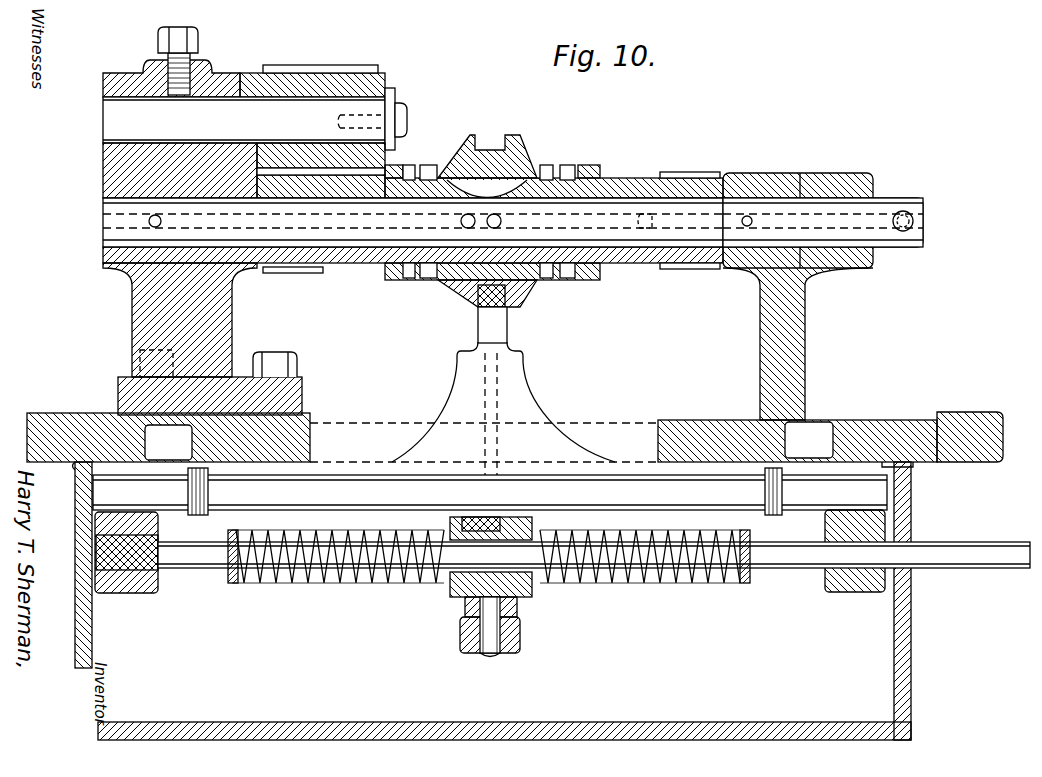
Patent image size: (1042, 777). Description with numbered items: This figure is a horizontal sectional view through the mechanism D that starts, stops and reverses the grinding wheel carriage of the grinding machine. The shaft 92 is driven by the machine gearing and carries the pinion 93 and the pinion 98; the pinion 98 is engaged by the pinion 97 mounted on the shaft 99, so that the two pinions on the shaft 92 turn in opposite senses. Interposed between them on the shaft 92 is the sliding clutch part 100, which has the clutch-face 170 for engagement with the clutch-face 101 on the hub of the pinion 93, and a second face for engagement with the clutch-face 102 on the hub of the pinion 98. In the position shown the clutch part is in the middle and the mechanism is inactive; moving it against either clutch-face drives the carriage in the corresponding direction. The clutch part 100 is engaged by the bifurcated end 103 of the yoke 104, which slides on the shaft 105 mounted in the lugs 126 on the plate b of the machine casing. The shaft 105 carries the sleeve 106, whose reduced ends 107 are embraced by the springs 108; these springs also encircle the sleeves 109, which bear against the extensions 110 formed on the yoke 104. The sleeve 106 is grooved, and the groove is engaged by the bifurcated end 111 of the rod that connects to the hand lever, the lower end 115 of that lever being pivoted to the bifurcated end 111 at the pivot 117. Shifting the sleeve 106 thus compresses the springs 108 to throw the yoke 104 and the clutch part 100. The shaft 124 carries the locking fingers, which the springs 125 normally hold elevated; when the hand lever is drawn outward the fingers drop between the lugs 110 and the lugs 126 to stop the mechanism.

The pinion 97 is at (378, 70).
The shaft 99 is at (560, 296).
The clutch-face 102 is at (412, 164).
The sliding clutch part 100 is at (515, 148).
The clutch-face 170 is at (553, 165).
The clutch-face 101 is at (578, 172).
The shaft 92 is at (795, 175).
The pinion 93 is at (694, 273).
The pinion 98 is at (297, 274).
The bifurcated end 111 is at (432, 280).
The bifurcated end 103 is at (507, 318).
The yoke 104 is at (520, 388).
The shaft 124 is at (658, 485).
The reduced ends 107 is at (430, 528).
The springs 108 is at (373, 585).
The sleeves 109 is at (258, 585).
The extensions 110 is at (215, 585).
The shaft 105 is at (800, 586).
The sleeve 106 is at (532, 586).
The lower end 115 is at (522, 640).
The pivot 117 is at (490, 656).
The springs 125 is at (489, 441).
The lugs 126 is at (860, 594).
The plate b is at (885, 420).
The mechanism for starting, stopping and reversing the carriage D is at (492, 616).